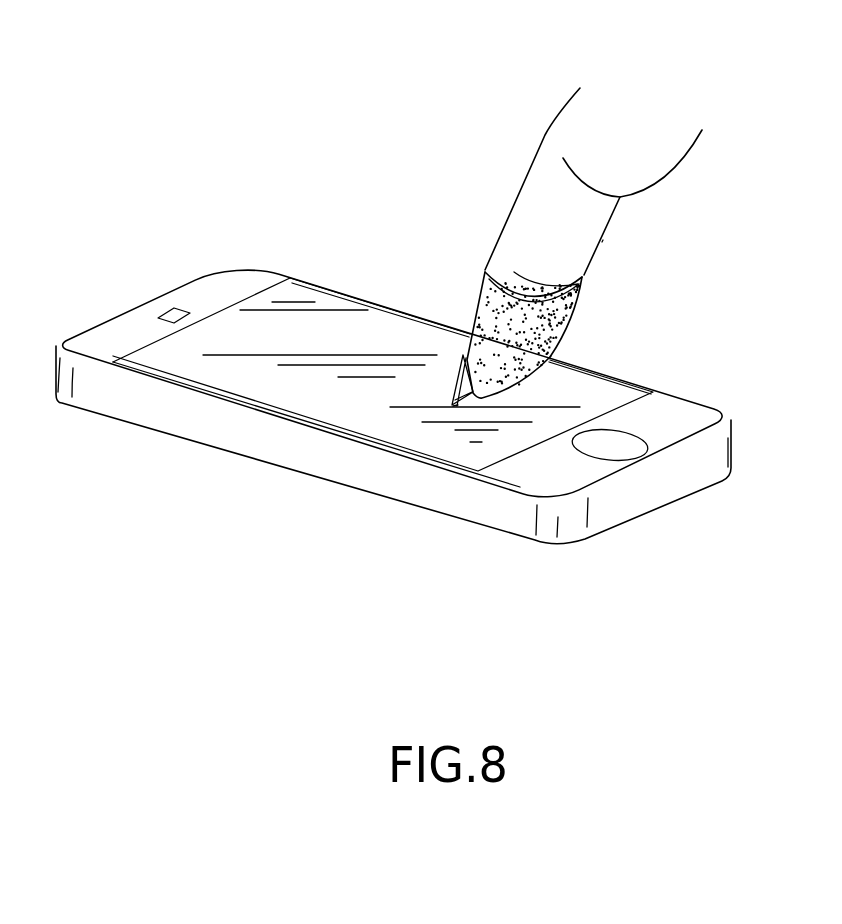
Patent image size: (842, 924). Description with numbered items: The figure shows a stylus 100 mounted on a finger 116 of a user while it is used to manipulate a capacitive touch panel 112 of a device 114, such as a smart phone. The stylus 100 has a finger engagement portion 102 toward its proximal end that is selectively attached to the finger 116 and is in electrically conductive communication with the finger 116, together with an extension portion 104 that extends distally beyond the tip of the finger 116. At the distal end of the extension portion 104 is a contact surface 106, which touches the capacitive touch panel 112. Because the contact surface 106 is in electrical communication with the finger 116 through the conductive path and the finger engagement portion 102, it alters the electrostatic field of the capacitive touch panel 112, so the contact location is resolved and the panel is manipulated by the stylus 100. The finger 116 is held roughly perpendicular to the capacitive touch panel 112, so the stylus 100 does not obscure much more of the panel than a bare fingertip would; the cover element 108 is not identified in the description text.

The stylus 100 is at (575, 331).
The finger engagement portion 102 is at (589, 273).
The extension portion 104 is at (452, 378).
The contact surface 106 is at (457, 404).
The fingertip cover 108 is at (468, 320).
The capacitive touch panel 112 is at (283, 314).
The device 114 is at (340, 465).
The finger 116 is at (533, 220).